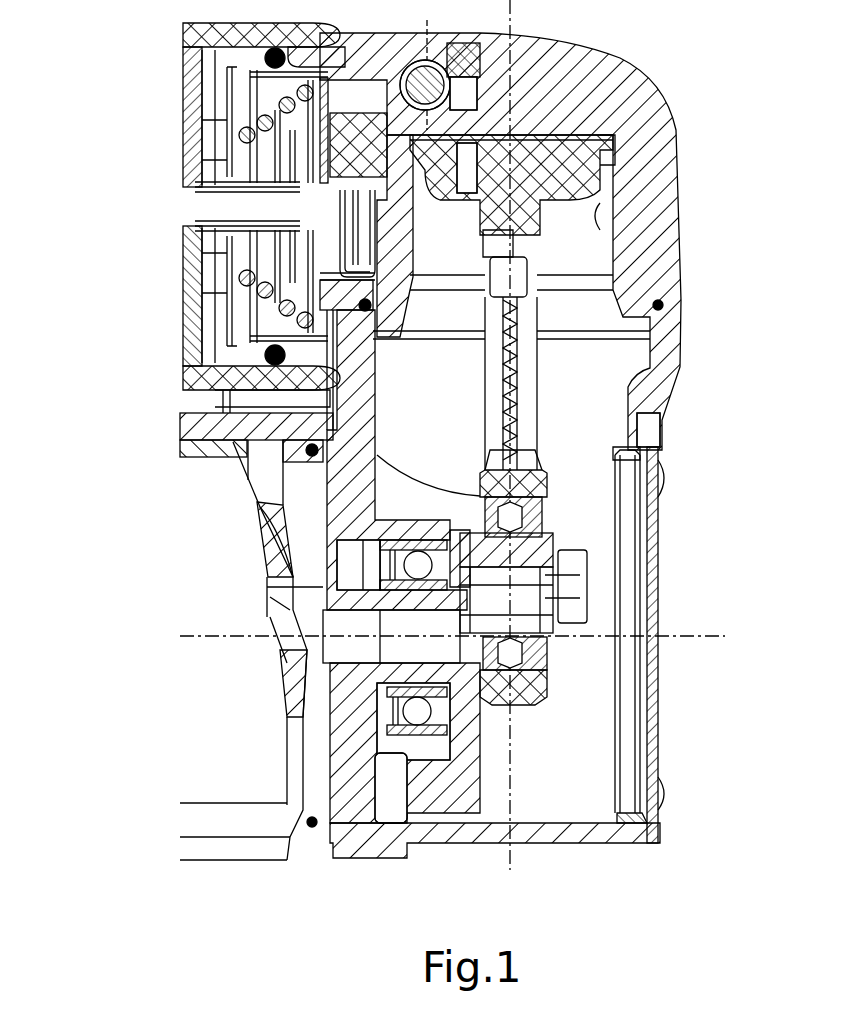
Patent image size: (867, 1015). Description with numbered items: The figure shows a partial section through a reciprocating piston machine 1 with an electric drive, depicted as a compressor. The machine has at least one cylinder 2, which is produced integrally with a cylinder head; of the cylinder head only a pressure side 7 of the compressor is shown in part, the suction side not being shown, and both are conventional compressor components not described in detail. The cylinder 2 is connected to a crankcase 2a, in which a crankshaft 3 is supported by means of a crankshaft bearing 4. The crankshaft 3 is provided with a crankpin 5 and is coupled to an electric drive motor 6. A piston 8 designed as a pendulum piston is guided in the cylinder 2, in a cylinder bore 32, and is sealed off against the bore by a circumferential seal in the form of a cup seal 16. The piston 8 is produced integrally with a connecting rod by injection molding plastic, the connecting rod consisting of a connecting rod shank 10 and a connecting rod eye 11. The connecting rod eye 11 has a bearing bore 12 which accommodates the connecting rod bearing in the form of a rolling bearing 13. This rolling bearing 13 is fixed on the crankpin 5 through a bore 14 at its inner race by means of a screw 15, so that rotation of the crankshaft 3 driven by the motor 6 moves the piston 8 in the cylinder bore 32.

The reciprocating piston machine 1 is at (466, 435).
The cylinder 2 is at (673, 263).
The crankcase 2a is at (350, 467).
The crankshaft 3 is at (330, 690).
The crankshaft bearing 4 is at (360, 715).
The crankpin 5 is at (553, 540).
The electric drive motor 6 is at (225, 541).
The pressure side 7 is at (152, 147).
The piston 8 is at (613, 143).
The connecting rod shank 10 is at (517, 363).
The connecting rod eye 11 is at (530, 483).
The bearing bore 12 is at (547, 671).
The rolling bearing 13 is at (560, 518).
The bore 14 is at (530, 598).
The screw 15 is at (573, 572).
The cup seal 16 is at (613, 157).
The cylinder bore 32 is at (603, 203).